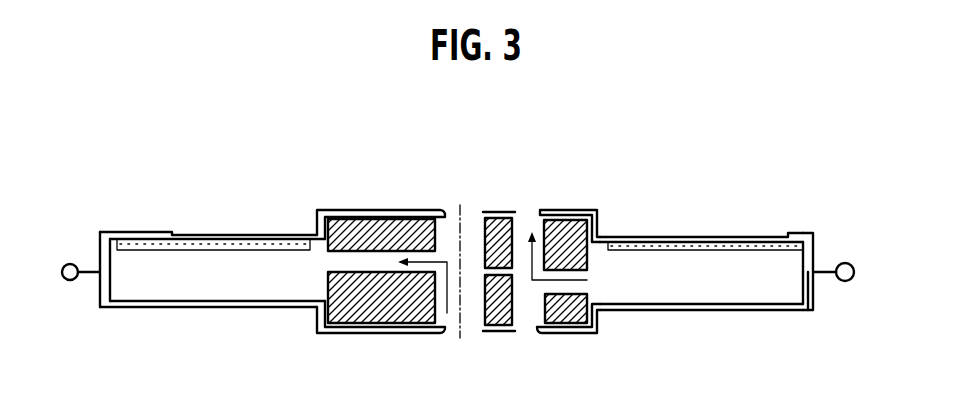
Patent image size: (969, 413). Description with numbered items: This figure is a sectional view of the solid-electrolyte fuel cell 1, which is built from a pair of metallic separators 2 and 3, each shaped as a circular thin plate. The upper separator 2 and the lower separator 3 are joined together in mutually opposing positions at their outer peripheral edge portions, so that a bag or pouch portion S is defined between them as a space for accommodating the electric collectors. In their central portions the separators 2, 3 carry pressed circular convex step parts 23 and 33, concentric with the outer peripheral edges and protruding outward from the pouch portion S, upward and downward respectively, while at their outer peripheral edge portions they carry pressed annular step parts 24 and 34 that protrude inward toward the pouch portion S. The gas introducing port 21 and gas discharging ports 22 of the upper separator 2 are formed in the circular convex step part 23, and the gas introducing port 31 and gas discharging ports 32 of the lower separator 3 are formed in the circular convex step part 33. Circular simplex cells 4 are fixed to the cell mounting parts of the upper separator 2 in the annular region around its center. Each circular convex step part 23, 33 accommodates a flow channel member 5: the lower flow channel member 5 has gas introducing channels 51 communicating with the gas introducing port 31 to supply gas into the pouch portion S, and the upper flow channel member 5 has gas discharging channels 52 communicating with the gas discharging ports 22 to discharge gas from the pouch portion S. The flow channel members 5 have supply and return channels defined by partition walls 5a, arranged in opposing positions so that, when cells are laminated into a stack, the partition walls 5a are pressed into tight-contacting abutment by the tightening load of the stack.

The solid-electrolyte fuel cell 1 is at (798, 132).
The separator 2 is at (698, 225).
The separator 3 is at (701, 317).
The circular simplex cell 4 is at (190, 243).
The flow channel member 5 is at (343, 225).
The partition wall 5a is at (477, 273).
The gas introducing port 21 is at (443, 210).
The gas discharging port 22 is at (543, 217).
The circular convex step part 23 is at (600, 212).
The annular step part 24 is at (818, 248).
The gas introducing port 31 is at (437, 330).
The gas discharging port 32 is at (540, 328).
The circular convex step part 33 is at (600, 333).
The annular step part 34 is at (817, 297).
The gas introducing channel 51 is at (432, 270).
The gas discharging channel 52 is at (523, 273).
The pouch portion S is at (788, 292).